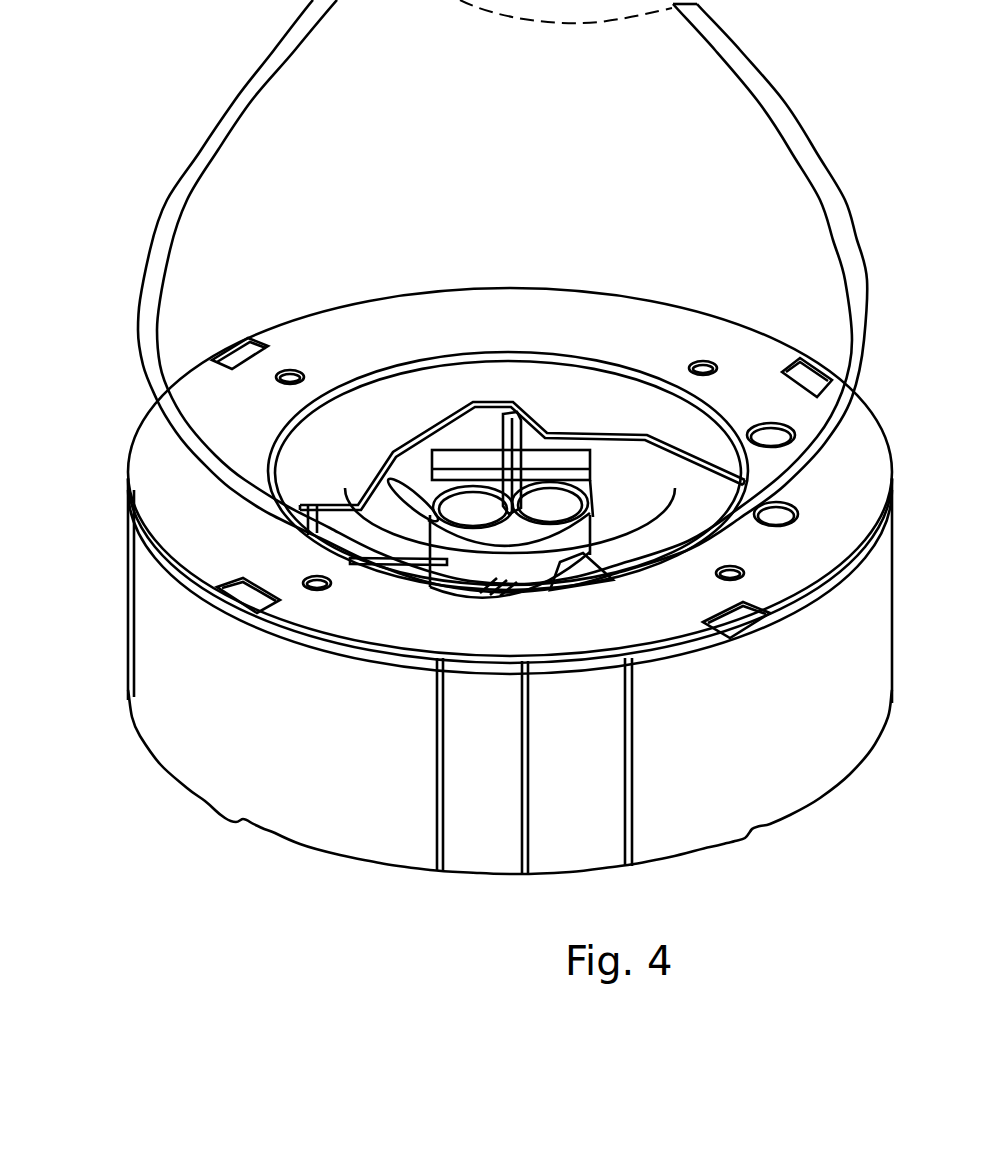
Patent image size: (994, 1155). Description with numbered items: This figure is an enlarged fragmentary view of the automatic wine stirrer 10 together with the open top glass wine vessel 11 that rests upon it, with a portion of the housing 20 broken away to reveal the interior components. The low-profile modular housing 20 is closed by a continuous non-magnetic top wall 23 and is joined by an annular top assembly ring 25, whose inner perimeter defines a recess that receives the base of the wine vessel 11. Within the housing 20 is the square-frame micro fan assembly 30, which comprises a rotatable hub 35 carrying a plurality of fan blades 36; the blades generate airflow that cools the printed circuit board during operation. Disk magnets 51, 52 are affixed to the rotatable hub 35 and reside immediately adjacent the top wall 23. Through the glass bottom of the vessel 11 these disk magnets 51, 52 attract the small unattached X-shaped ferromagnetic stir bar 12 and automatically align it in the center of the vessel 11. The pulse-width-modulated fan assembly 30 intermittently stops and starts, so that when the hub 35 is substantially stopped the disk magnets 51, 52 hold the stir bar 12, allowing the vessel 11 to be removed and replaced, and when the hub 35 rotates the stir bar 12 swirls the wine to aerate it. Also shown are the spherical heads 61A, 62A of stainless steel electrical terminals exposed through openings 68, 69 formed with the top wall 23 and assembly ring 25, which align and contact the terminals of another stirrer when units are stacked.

The wine stirrer 10 is at (112, 430).
The wine vessel 11 is at (238, 107).
The stir bar 12 is at (520, 428).
The housing 20 is at (779, 721).
The top wall 23 is at (382, 400).
The top assembly ring 25 is at (155, 458).
The fan assembly 30 is at (602, 424).
The rotatable hub 35 is at (522, 532).
The fan blades 36 is at (640, 538).
The disk magnet 51 is at (568, 498).
The disk magnet 52 is at (457, 507).
The spherical head 61A is at (777, 437).
The spherical head 62A is at (773, 518).
The opening 68 is at (767, 426).
The opening 69 is at (802, 515).